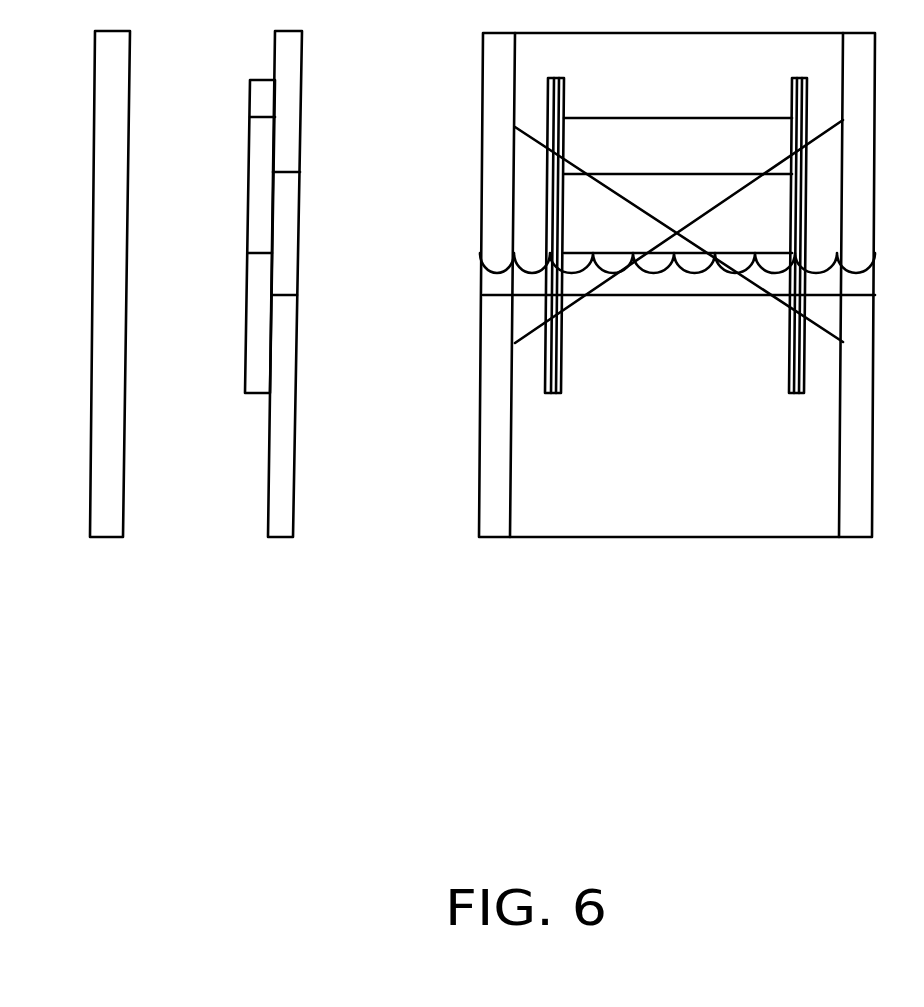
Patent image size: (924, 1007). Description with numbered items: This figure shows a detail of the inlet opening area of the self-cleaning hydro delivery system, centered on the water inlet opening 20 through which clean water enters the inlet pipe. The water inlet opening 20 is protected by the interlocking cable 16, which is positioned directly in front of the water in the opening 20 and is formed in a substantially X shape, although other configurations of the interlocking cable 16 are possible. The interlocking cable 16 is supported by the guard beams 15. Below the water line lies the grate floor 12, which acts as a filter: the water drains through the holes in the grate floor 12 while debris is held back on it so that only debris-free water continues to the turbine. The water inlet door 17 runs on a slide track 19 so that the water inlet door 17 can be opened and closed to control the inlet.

The grate floor 12 is at (812, 295).
The guard beams 15 is at (101, 403).
The interlocking cable 16 is at (626, 255).
The water inlet door 17 is at (247, 228).
The slide track 19 is at (250, 403).
The water inlet opening 20 is at (297, 297).